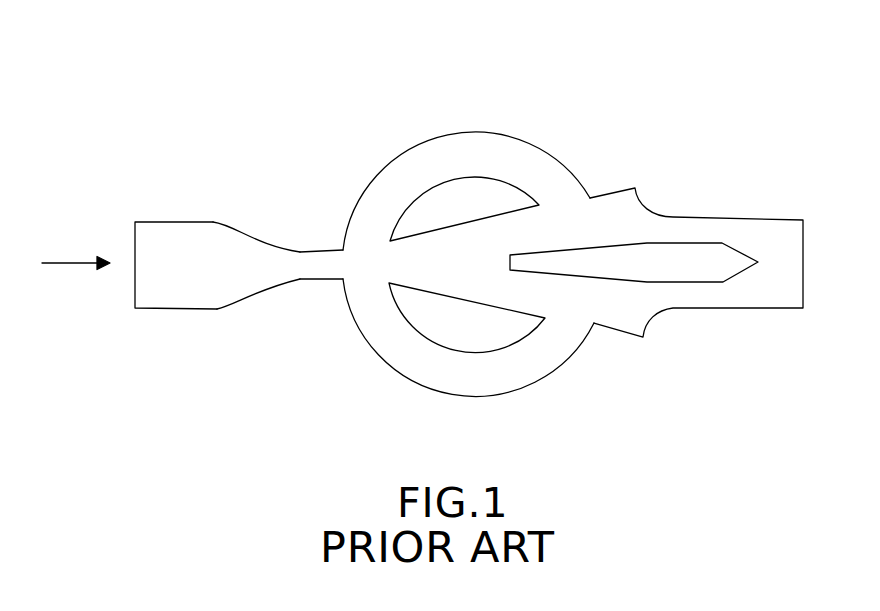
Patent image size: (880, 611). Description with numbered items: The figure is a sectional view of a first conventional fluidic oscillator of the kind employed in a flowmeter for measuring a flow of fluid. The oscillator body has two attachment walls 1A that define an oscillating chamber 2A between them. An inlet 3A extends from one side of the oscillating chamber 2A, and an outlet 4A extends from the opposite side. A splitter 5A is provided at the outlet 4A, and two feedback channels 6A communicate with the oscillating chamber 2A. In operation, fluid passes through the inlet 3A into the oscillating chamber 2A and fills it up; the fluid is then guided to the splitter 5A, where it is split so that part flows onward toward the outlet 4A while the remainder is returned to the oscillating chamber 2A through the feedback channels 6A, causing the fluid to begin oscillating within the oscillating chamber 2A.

The attachment walls 1A is at (431, 230).
The oscillating chamber 2A is at (470, 250).
The inlet 3A is at (267, 253).
The outlet 4A is at (777, 247).
The splitter 5A is at (553, 248).
The feedback channels 6A is at (520, 162).